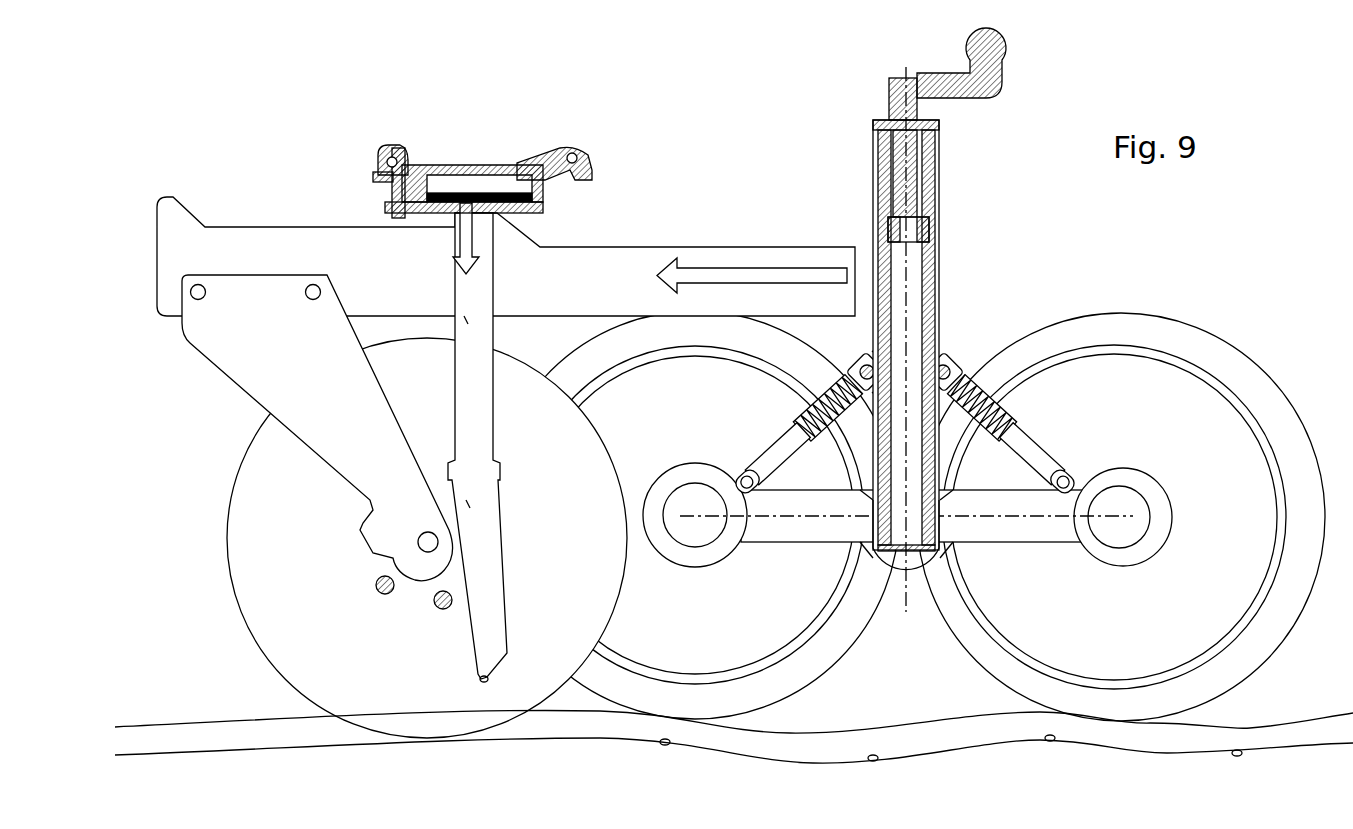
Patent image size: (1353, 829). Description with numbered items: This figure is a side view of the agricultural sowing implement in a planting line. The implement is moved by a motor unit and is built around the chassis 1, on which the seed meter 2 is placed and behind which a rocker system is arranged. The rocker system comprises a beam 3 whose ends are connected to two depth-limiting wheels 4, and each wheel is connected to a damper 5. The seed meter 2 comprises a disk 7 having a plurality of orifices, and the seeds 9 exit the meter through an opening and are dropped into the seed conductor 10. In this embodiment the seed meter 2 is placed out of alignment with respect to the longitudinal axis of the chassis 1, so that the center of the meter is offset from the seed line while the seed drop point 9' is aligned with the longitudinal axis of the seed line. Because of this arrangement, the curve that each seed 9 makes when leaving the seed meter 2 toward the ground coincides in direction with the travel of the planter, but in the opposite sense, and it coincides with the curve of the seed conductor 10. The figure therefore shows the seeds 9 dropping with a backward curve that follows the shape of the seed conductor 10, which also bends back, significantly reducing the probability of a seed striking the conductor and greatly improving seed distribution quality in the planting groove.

The chassis 1 is at (643, 260).
The seed meter 2 is at (388, 148).
The beam 3 is at (1007, 530).
The depth-limiting wheels 4 is at (1252, 380).
The damper 5 is at (1030, 437).
The disk 7 is at (500, 192).
The seeds 9 is at (734, 717).
The seed drop point 9' is at (456, 184).
The seed conductor 10 is at (503, 290).